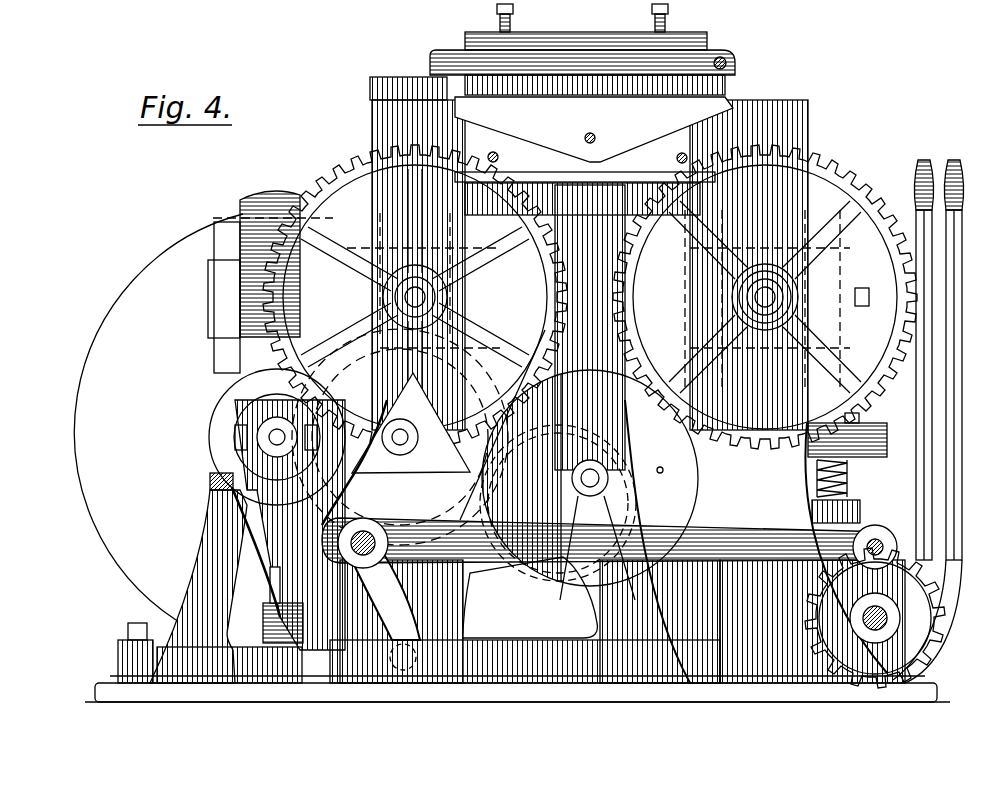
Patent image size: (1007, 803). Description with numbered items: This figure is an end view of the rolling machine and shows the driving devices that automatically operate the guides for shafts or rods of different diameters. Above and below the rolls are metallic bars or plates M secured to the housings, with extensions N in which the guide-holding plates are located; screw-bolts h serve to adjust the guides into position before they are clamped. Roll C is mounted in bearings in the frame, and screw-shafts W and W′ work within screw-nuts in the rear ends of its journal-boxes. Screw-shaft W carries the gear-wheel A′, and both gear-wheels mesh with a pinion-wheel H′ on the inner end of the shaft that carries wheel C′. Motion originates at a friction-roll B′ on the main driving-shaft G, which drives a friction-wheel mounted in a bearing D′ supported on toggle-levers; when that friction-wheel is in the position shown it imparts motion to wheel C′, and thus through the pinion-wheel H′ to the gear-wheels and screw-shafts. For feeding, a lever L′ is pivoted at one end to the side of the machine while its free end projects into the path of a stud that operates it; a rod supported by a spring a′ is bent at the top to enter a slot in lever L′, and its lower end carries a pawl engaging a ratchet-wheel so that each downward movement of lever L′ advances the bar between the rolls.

The screw-bolts h is at (573, 16).
The metallic bars or plates M is at (594, 59).
The extensions N is at (594, 130).
The gear-wheel A′ is at (352, 180).
The screw-shaft W is at (465, 225).
The screw-shaft W′ is at (755, 297).
The pinion-wheel H′ is at (700, 470).
The friction-roll B′ is at (229, 533).
The lever D is at (411, 438).
The bearing D′ is at (400, 437).
The roll C is at (590, 526).
The wheel C′ is at (548, 565).
The lever bar F′ is at (606, 543).
The main driving-shaft G is at (875, 618).
The lever L′ is at (880, 418).
The spring a′ is at (841, 478).